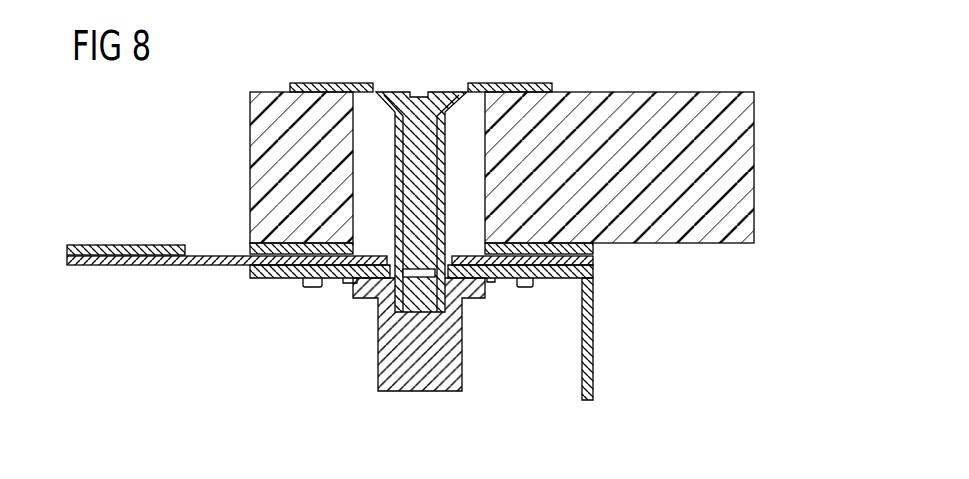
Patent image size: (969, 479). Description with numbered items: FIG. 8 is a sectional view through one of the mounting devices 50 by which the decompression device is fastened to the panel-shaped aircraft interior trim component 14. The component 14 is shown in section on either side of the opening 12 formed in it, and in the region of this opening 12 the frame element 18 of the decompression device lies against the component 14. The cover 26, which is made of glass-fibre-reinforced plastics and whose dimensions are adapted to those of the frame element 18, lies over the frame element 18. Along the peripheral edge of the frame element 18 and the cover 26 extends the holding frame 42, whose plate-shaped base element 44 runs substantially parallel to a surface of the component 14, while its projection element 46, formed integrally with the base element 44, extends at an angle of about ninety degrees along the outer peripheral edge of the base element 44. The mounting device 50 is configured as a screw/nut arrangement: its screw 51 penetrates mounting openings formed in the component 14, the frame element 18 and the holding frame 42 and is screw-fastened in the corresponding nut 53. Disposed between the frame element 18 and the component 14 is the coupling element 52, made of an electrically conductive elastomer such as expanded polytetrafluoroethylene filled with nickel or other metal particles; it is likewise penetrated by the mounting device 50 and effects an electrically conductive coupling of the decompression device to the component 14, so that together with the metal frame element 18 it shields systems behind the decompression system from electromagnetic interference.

The opening 12 is at (250, 178).
The component 14 is at (675, 105).
The frame element 18 is at (207, 267).
The cover 26 is at (122, 245).
The holding frame 42 is at (470, 338).
The base element 44 is at (548, 272).
The projection element 46 is at (595, 382).
The mounting device 50 is at (426, 176).
The screw 51 is at (420, 115).
The coupling element 52 is at (593, 250).
The nut 53 is at (422, 383).